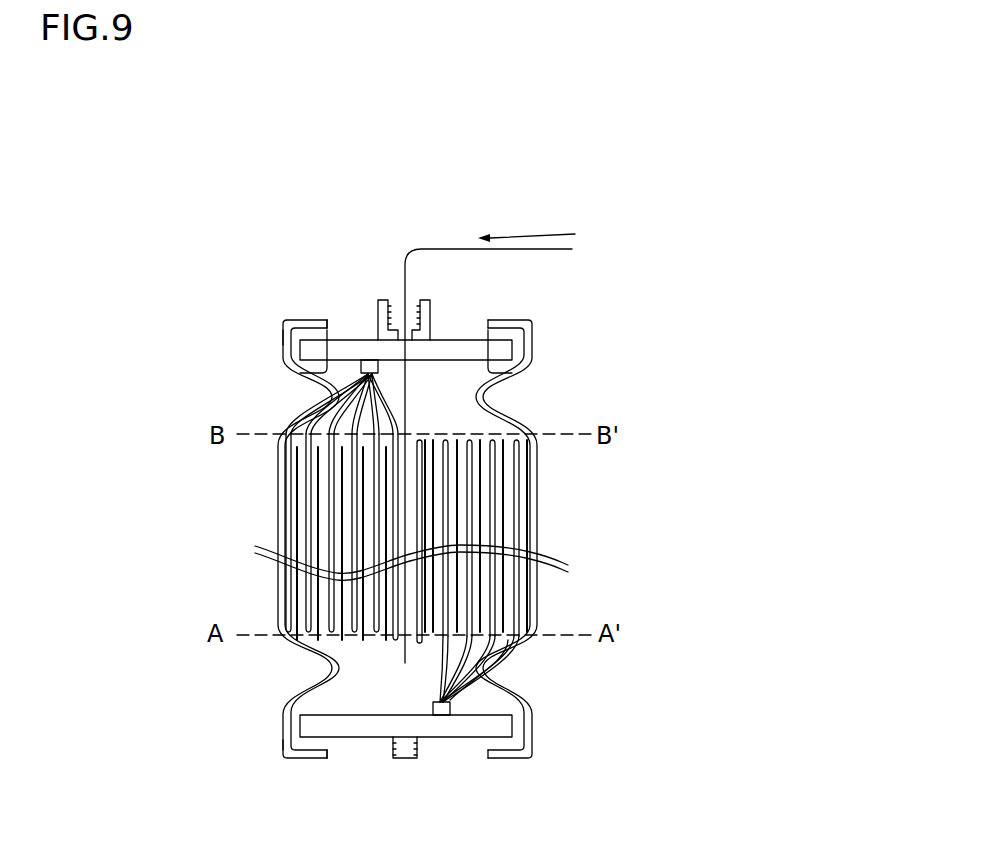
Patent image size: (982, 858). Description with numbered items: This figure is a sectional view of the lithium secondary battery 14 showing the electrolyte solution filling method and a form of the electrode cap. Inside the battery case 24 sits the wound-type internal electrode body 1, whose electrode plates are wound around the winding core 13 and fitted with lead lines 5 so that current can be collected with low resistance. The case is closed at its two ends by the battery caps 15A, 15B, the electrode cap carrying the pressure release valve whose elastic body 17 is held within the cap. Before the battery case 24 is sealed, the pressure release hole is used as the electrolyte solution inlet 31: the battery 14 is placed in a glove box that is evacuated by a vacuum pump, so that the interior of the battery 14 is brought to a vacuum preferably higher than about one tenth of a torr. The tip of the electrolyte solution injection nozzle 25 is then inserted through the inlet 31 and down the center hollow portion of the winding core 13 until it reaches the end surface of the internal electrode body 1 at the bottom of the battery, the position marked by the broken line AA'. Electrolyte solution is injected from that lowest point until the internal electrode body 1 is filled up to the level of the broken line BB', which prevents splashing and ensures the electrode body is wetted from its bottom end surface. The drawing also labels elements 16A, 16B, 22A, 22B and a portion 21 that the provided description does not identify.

The internal electrode body 1 is at (500, 492).
The lead line 5 is at (470, 688).
The winding core 13 is at (418, 522).
The battery 14 is at (340, 232).
The battery cap 15A is at (486, 326).
The battery cap 15B is at (448, 740).
The upper terminal 16A is at (383, 300).
The lower terminal 16B is at (410, 752).
The elastic body 17 is at (325, 334).
The bellows portion of casing 21 is at (518, 388).
The upper current collector 22A is at (360, 367).
The lower current collector 22B is at (452, 708).
The battery case 24 is at (283, 492).
The electrolyte solution injection nozzle 25 is at (447, 247).
The electrolyte solution inlet 31 is at (420, 372).